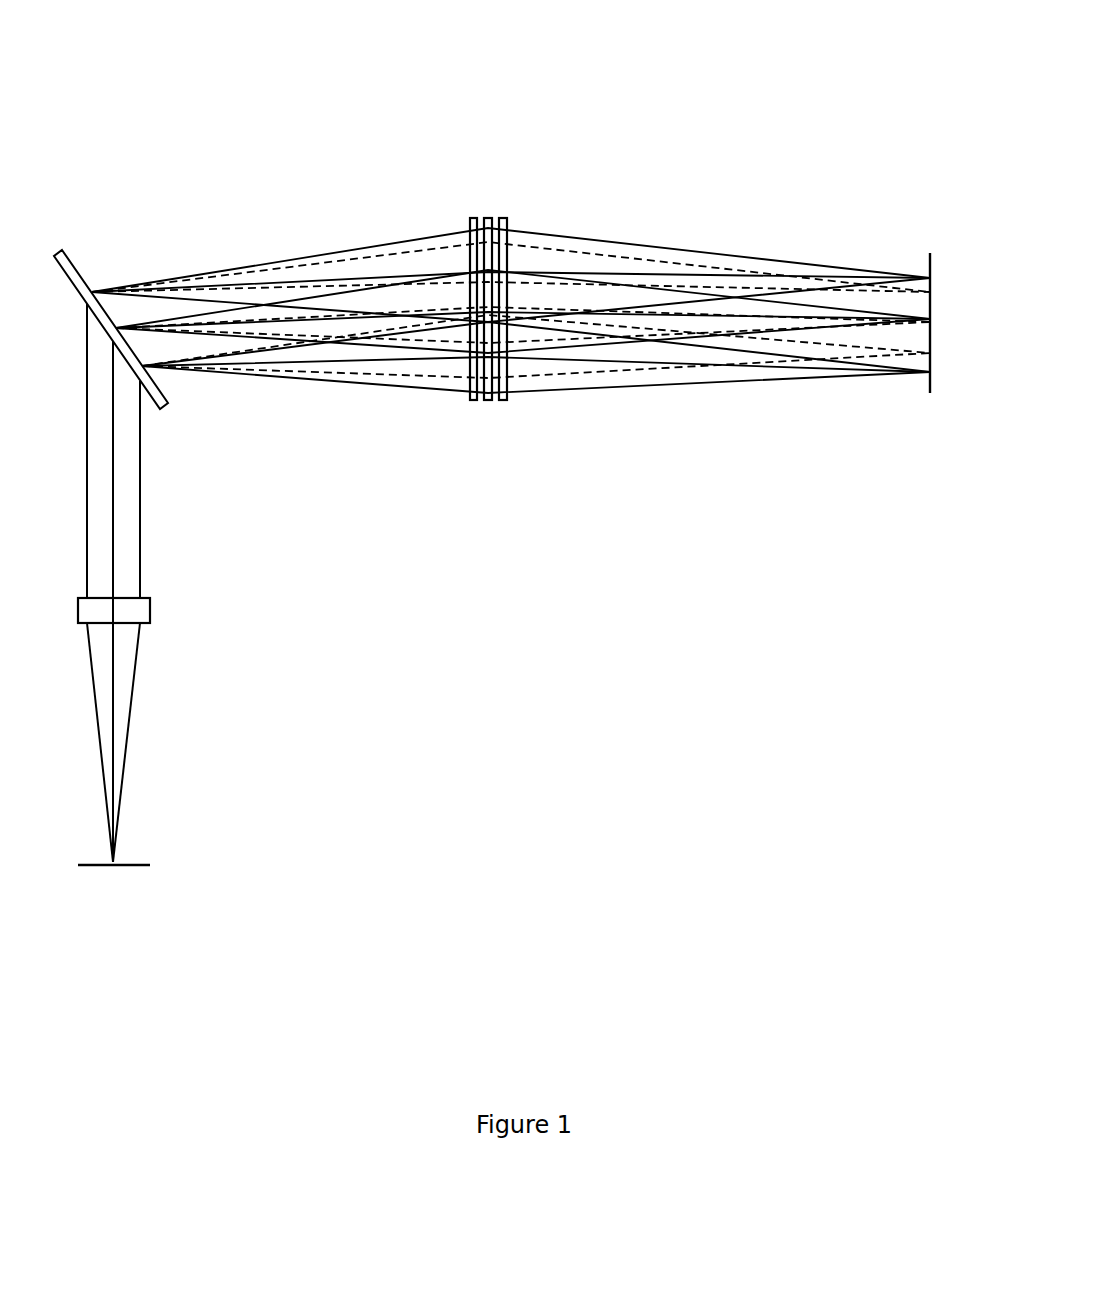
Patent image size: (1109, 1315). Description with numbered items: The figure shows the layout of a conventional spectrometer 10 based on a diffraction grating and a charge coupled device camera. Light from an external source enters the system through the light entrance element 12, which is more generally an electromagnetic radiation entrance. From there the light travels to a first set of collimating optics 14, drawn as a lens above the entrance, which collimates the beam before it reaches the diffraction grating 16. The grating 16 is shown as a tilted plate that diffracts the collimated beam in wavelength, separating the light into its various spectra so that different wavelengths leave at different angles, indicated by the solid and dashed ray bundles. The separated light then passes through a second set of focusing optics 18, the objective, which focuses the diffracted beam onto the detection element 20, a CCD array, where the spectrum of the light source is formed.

The spectrometer 10 is at (668, 134).
The light entrance element 12 is at (140, 863).
The first set of collimating optics 14 is at (149, 598).
The diffraction grating 16 is at (50, 252).
The second set of focusing optics 18 is at (478, 218).
The detection element 20 is at (930, 240).